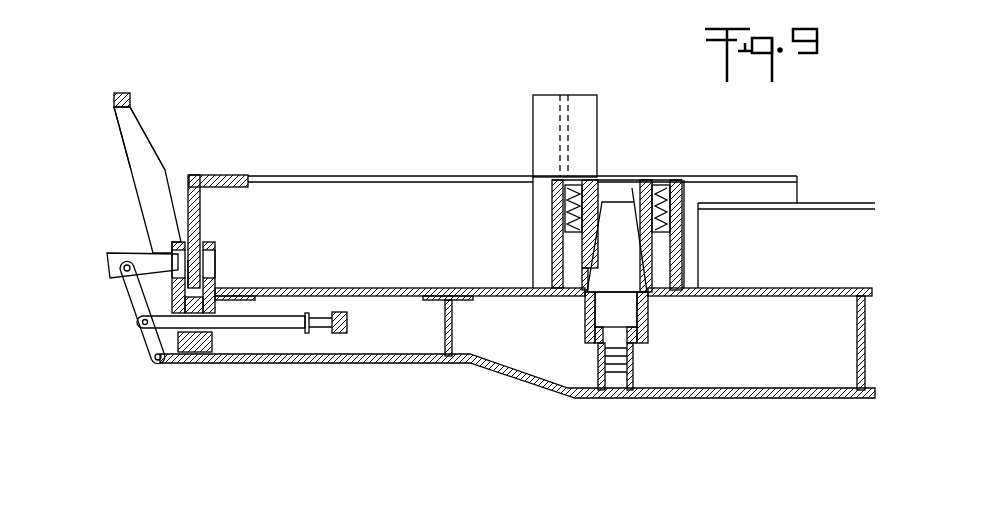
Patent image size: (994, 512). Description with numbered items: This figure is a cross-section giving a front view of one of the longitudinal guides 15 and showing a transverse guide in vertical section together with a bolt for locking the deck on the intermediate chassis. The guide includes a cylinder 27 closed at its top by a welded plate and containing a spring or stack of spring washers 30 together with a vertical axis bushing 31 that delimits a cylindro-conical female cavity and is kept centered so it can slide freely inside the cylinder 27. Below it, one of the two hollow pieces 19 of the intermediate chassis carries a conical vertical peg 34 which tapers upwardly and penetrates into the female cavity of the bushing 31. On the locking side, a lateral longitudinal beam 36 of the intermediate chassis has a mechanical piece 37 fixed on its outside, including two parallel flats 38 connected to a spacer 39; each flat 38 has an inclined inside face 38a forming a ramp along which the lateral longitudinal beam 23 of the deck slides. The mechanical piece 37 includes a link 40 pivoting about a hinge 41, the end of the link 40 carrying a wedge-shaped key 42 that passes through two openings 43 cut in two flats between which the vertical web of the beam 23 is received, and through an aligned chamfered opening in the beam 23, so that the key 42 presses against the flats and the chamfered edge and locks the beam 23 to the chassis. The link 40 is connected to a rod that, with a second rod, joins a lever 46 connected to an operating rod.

The longitudinal guide 15 is at (592, 115).
The hollow piece 19 is at (585, 321).
The lateral longitudinal beam of the deck 23 is at (202, 213).
The cylinder 27 is at (677, 200).
The spring or stack of spring washers 30 is at (568, 197).
The vertical axis bushing 31 is at (583, 250).
The conical vertical peg 34 is at (620, 227).
The lateral longitudinal beam of the intermediate chassis 36 is at (202, 358).
The mechanical piece 37 is at (178, 352).
The flat 38 is at (122, 128).
The inclined inside face 38a is at (154, 137).
The spacer 39 is at (121, 93).
The link 40 is at (137, 300).
The hinge 41 is at (153, 357).
The wedge-shaped key 42 is at (108, 258).
The opening 43 is at (216, 256).
The lever 46 is at (347, 333).